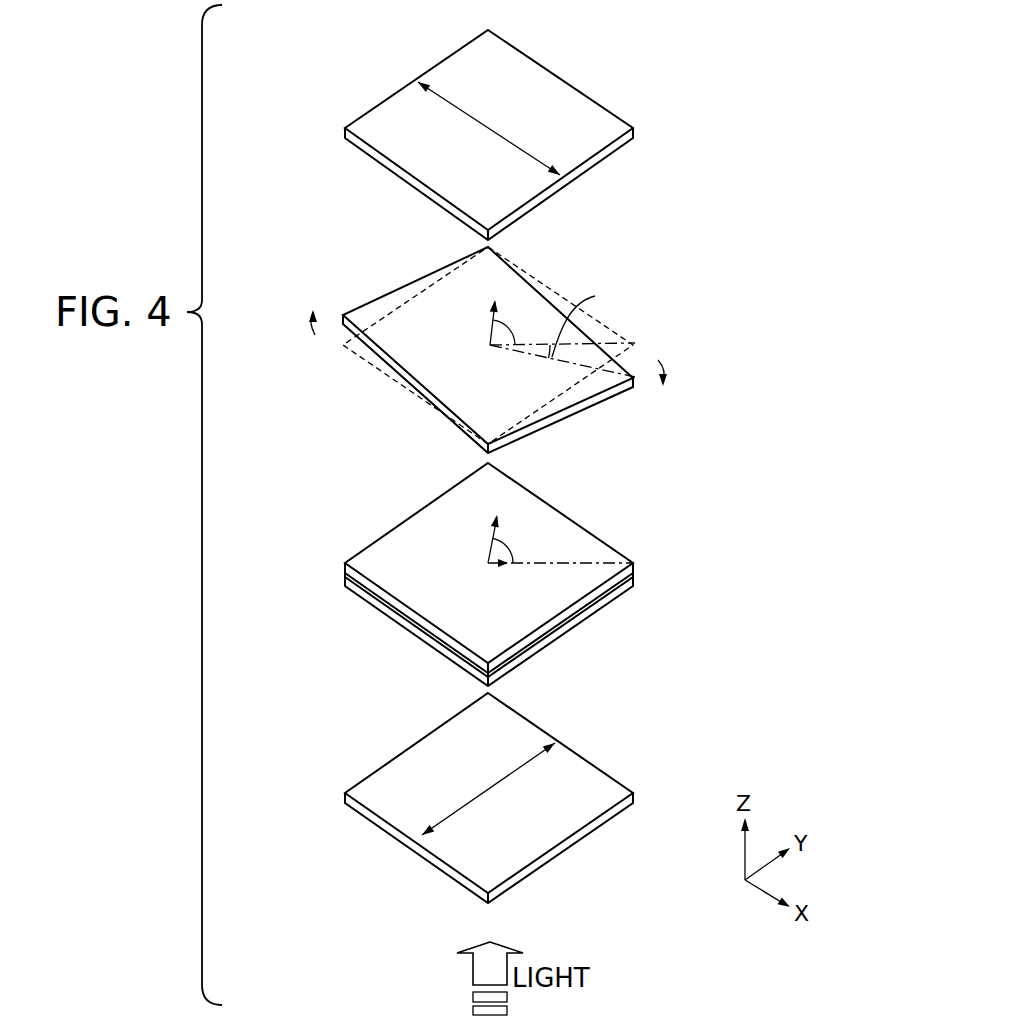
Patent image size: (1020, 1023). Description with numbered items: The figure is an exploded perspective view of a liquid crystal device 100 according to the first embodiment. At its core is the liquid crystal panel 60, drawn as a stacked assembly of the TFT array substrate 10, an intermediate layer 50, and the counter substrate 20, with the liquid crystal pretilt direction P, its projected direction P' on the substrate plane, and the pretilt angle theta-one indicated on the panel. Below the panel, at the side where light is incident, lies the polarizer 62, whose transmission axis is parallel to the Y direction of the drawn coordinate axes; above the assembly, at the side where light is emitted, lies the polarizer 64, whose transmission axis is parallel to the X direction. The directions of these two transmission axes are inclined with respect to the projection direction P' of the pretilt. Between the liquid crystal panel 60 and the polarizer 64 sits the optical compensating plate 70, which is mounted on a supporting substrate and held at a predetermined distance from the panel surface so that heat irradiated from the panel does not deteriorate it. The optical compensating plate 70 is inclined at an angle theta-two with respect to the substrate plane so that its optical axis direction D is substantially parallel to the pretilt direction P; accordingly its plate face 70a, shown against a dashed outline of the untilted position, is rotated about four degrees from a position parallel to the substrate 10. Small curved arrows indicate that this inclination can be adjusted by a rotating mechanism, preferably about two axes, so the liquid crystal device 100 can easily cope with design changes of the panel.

The liquid crystal device 100 is at (590, 68).
The polarizer 64 is at (360, 125).
The optical compensating plate 70 is at (481, 343).
The plate face 70a is at (427, 368).
The liquid crystal panel 60 is at (477, 574).
The TFT array substrate 10 is at (580, 532).
The liquid crystal layer 50 is at (632, 577).
The counter substrate 20 is at (605, 610).
The polarizer 62 is at (368, 783).